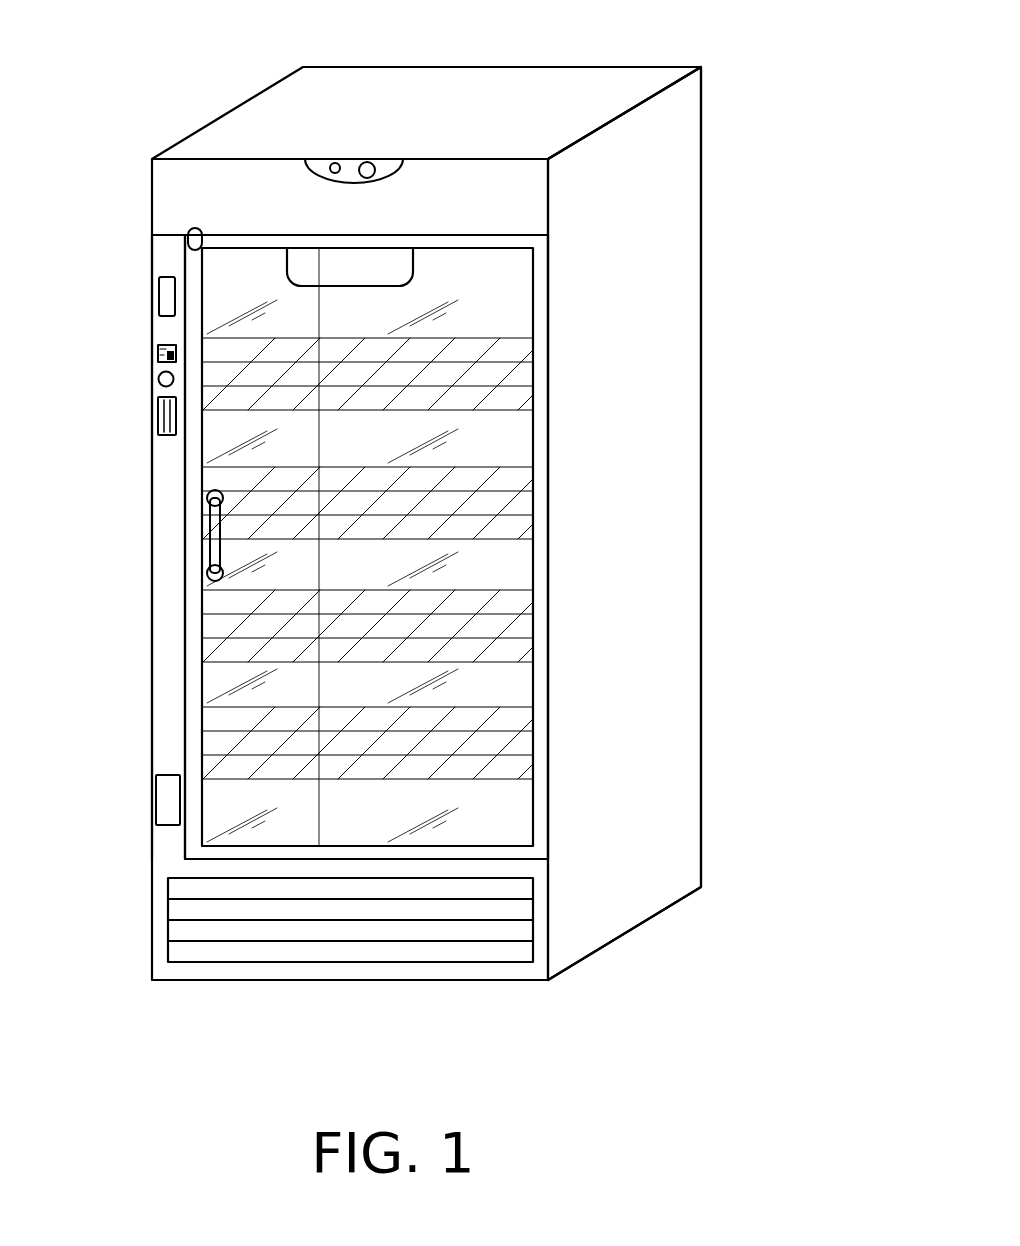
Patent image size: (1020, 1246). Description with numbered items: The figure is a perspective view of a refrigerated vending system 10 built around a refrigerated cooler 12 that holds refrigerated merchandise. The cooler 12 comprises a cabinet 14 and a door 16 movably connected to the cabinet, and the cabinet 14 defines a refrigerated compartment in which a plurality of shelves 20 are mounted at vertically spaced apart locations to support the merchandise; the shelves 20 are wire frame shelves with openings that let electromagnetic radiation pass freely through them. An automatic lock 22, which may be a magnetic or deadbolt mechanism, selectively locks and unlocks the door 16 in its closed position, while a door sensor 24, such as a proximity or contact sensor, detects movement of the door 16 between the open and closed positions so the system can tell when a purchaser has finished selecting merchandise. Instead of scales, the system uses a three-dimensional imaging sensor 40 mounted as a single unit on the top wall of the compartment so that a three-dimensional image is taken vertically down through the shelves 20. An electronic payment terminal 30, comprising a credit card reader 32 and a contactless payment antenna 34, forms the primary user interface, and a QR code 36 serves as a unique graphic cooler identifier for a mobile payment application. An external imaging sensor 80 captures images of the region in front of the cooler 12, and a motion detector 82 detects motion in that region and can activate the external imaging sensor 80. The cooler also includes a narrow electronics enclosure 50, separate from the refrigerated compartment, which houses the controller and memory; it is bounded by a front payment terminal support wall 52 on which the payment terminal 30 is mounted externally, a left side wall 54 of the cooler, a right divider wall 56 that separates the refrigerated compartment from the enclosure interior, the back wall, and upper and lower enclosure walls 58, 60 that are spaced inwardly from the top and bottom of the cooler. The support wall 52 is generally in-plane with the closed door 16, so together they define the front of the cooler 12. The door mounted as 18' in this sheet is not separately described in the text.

The refrigerated vending system 10 is at (783, 624).
The refrigerated cooler 12 is at (719, 810).
The cabinet 14 is at (678, 462).
The door 16 is at (473, 220).
The door 18' is at (311, 547).
The shelves 20 is at (258, 410).
The automatic lock 22 is at (160, 293).
The door sensor 24 is at (190, 221).
The electronic payment terminal 30 is at (123, 387).
The credit card reader 32 is at (158, 423).
The contactless payment antenna 34 is at (158, 379).
The QR code 36 is at (158, 353).
The three-dimensional imaging sensor 40 is at (317, 262).
The electronics enclosure 50 is at (292, 338).
The front payment terminal support wall 52 is at (167, 575).
The left side wall 54 is at (152, 757).
The right divider wall 56 is at (227, 612).
The upper enclosure wall 58 is at (160, 234).
The lower enclosure wall 60 is at (173, 862).
The external imaging sensor 80 is at (367, 162).
The motion detector 82 is at (335, 163).